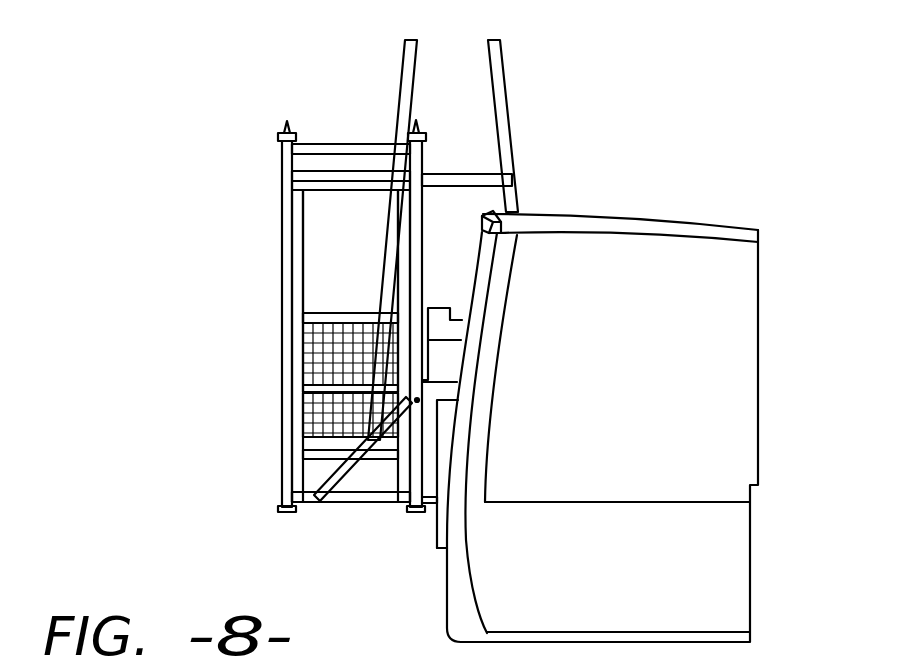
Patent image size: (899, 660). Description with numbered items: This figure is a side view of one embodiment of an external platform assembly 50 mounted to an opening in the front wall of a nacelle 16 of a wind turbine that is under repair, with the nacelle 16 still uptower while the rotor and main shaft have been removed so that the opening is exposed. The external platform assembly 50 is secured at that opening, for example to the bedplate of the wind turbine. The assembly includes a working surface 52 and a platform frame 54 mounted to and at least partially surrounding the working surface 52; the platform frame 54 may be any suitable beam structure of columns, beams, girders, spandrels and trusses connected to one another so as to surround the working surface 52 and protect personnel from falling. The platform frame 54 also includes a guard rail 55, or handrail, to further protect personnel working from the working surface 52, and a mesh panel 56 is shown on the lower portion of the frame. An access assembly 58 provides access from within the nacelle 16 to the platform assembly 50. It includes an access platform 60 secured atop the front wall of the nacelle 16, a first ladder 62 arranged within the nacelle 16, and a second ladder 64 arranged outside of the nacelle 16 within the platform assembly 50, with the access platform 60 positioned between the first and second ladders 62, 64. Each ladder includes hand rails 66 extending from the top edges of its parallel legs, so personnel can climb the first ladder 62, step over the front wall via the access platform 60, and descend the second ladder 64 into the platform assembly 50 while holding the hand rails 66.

The nacelle 16 is at (666, 233).
The external platform assembly 50 is at (219, 253).
The working surface 52 is at (352, 504).
The platform frame 54 is at (284, 355).
The guard rail 55 is at (298, 250).
The lower mesh panel 56 is at (328, 412).
The access assembly 58 is at (520, 132).
The access platform 60 is at (468, 189).
The first ladder 62 is at (503, 209).
The second ladder 64 is at (383, 263).
The hand rails 66 is at (472, 222).